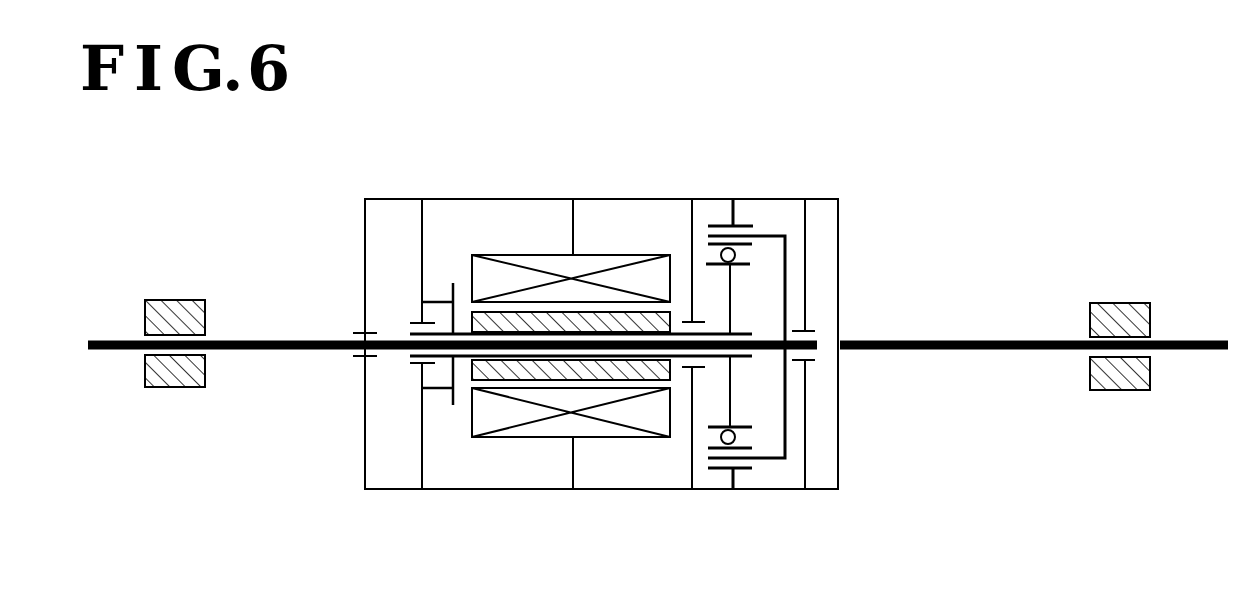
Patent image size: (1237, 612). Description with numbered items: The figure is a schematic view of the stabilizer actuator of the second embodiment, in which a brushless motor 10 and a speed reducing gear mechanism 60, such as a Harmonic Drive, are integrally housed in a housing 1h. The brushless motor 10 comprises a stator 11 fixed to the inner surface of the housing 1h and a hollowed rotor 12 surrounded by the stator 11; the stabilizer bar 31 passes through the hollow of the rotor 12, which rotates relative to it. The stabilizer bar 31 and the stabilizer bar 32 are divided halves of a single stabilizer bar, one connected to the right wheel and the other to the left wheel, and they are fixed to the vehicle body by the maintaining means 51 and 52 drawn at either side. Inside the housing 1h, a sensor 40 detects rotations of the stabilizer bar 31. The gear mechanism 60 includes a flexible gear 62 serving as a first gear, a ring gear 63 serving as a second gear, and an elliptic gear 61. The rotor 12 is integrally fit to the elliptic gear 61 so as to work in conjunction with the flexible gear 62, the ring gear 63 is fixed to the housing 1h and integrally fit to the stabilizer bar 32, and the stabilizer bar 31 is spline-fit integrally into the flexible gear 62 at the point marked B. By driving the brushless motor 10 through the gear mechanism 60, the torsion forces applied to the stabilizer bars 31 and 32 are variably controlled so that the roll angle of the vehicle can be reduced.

The housing 1h is at (608, 490).
The brushless motor 10 is at (581, 348).
The stator 11 is at (520, 258).
The rotor 12 is at (472, 305).
The stabilizer bar 31 is at (271, 340).
The stabilizer bar 32 is at (952, 340).
The sensor 40 is at (441, 392).
The maintaining means 51 is at (170, 300).
The maintaining means 52 is at (1117, 302).
The gear mechanism 60 is at (766, 331).
The elliptic gear 61 is at (710, 265).
The flexible gear 62 is at (765, 236).
The ring gear 63 is at (722, 225).
The spline-fit portion B is at (783, 352).